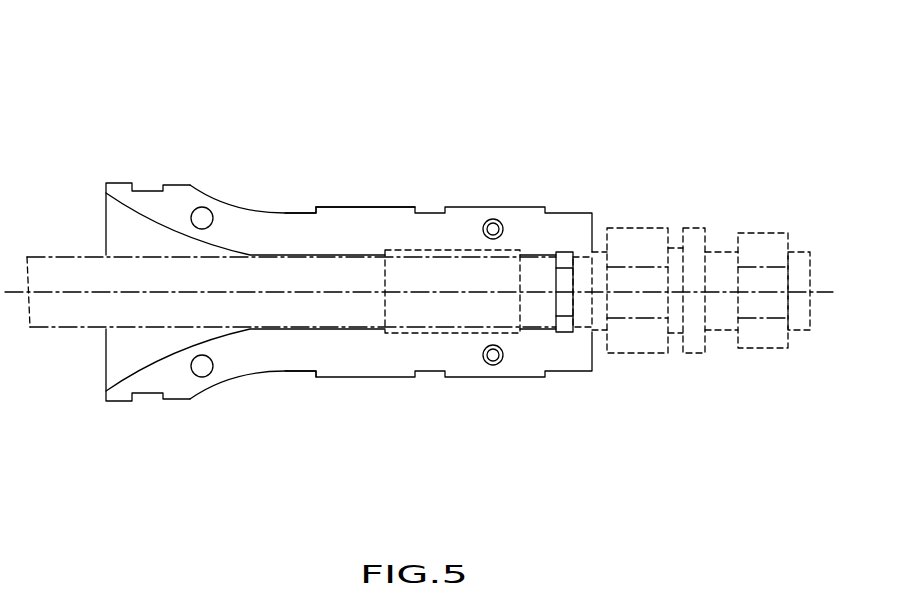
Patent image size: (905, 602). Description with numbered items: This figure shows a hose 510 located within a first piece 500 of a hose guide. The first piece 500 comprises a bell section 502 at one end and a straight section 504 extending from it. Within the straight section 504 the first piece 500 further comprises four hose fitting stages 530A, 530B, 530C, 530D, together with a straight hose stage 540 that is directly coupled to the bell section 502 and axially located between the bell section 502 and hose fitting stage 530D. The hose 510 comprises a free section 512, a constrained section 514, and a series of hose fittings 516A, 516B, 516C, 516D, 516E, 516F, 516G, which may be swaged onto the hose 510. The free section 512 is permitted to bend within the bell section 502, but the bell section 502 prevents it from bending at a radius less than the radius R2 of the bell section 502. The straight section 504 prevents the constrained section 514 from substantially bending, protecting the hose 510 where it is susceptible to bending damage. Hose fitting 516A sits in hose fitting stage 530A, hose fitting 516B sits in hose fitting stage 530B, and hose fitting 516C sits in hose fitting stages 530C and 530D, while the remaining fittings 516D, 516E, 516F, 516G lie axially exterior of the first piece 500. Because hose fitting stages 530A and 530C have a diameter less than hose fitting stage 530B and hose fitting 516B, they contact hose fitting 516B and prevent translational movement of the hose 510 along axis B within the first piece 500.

The first piece 500 is at (357, 203).
The bell section 502 is at (175, 160).
The straight section 504 is at (408, 145).
The hose 510 is at (73, 305).
The free section 512 is at (88, 272).
The constrained section 514 is at (297, 240).
The hose fitting 516A is at (595, 268).
The hose fitting 516B is at (562, 272).
The hose fitting 516C is at (500, 277).
The hose fitting 516D is at (640, 307).
The hose fitting 516E is at (692, 242).
The hose fitting 516F is at (757, 273).
The hose fitting 516G is at (798, 260).
The hose fitting stage 530A is at (585, 330).
The hose fitting stage 530B is at (565, 330).
The hose fitting stage 530C is at (528, 330).
The hose fitting stage 530D is at (408, 333).
The straight hose stage 540 is at (287, 330).
The radius R2 is at (175, 232).
The axis B is at (827, 292).